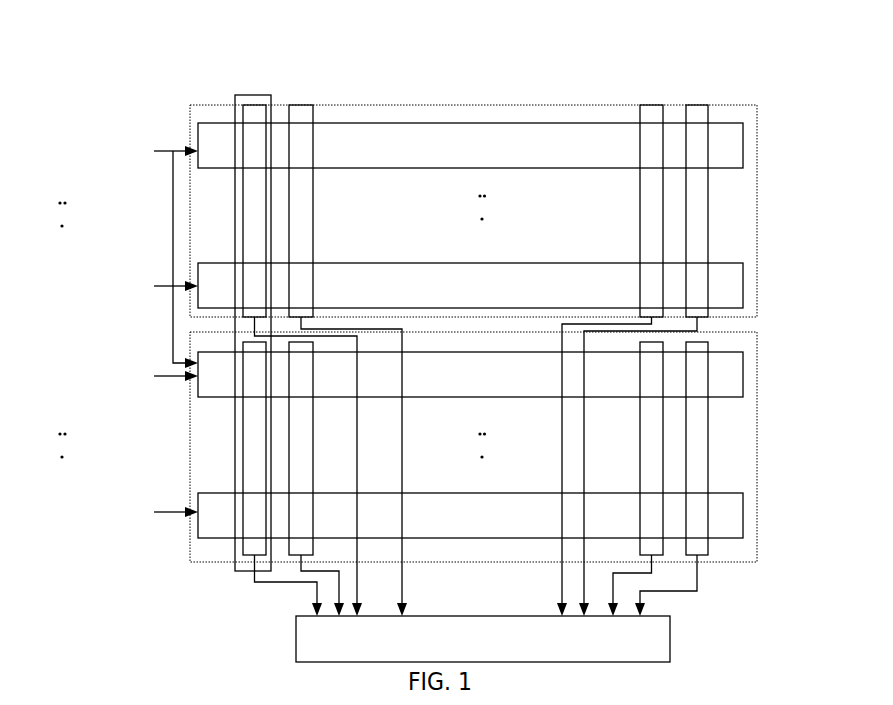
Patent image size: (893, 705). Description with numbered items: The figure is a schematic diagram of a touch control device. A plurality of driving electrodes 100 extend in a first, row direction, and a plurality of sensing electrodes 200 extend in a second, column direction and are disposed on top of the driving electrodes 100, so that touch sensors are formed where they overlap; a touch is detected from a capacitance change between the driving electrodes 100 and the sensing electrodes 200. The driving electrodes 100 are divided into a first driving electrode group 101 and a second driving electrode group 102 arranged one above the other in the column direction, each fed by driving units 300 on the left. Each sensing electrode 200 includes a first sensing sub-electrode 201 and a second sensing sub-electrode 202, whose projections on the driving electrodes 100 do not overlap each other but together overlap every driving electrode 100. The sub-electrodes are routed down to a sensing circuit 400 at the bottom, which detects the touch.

The driving electrodes 100 is at (455, 125).
The first driving electrode group 101 is at (610, 105).
The second driving electrode group 102 is at (753, 490).
The sensing electrodes 200 is at (266, 95).
The first sensing sub-electrode 201 is at (708, 218).
The second sensing sub-electrode 202 is at (708, 453).
The driving units 300 is at (107, 331).
The sensing circuit 400 is at (483, 639).